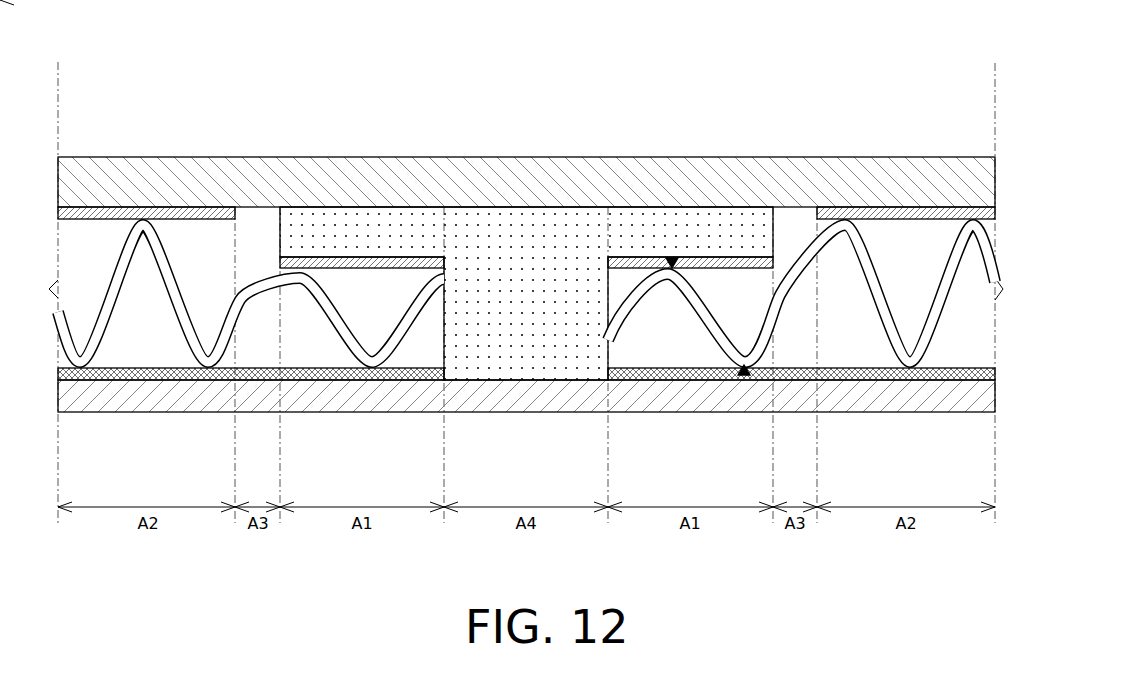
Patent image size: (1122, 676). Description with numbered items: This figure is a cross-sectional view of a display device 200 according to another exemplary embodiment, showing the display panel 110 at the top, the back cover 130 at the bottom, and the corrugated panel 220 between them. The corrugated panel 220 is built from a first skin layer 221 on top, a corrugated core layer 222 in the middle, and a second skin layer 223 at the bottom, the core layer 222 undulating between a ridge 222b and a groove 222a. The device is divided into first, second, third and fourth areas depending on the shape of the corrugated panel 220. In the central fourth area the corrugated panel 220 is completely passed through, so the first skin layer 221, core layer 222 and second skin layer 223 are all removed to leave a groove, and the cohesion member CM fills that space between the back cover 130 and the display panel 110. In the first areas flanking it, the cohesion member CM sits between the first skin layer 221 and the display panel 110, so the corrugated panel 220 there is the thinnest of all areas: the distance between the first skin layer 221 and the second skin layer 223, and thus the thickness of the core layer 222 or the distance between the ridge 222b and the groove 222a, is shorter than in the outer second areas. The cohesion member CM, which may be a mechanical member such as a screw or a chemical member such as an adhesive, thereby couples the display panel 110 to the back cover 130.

The display device 200 is at (966, 41).
The display panel 110 is at (975, 181).
The back cover 130 is at (975, 397).
The corrugated panel 220 is at (590, 283).
The first skin layer 221 is at (978, 213).
The core layer 222 is at (940, 308).
The groove 222a is at (744, 376).
The ridge 222b is at (672, 256).
The second skin layer 223 is at (978, 374).
The cohesion member CM is at (522, 237).